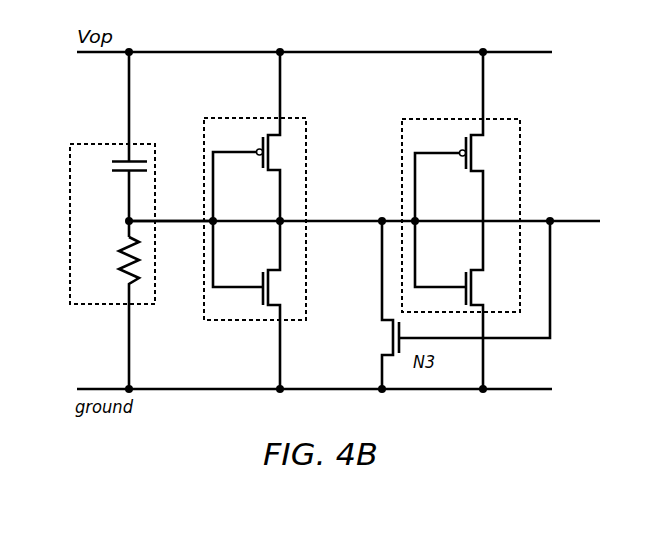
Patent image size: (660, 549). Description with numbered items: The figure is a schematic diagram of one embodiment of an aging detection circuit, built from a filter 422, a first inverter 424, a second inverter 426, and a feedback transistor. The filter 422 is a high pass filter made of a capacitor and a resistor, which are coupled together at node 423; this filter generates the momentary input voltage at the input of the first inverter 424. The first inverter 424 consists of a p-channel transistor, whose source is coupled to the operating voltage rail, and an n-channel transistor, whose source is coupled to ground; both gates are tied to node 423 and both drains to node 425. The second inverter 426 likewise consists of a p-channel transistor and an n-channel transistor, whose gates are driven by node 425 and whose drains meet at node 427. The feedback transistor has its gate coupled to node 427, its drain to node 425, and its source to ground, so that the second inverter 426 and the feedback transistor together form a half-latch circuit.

The filter 422 is at (70, 144).
The node 423 is at (185, 220).
The first inverter 424 is at (297, 118).
The node 425 is at (355, 221).
The second inverter 426 is at (507, 119).
The node 427 is at (590, 221).